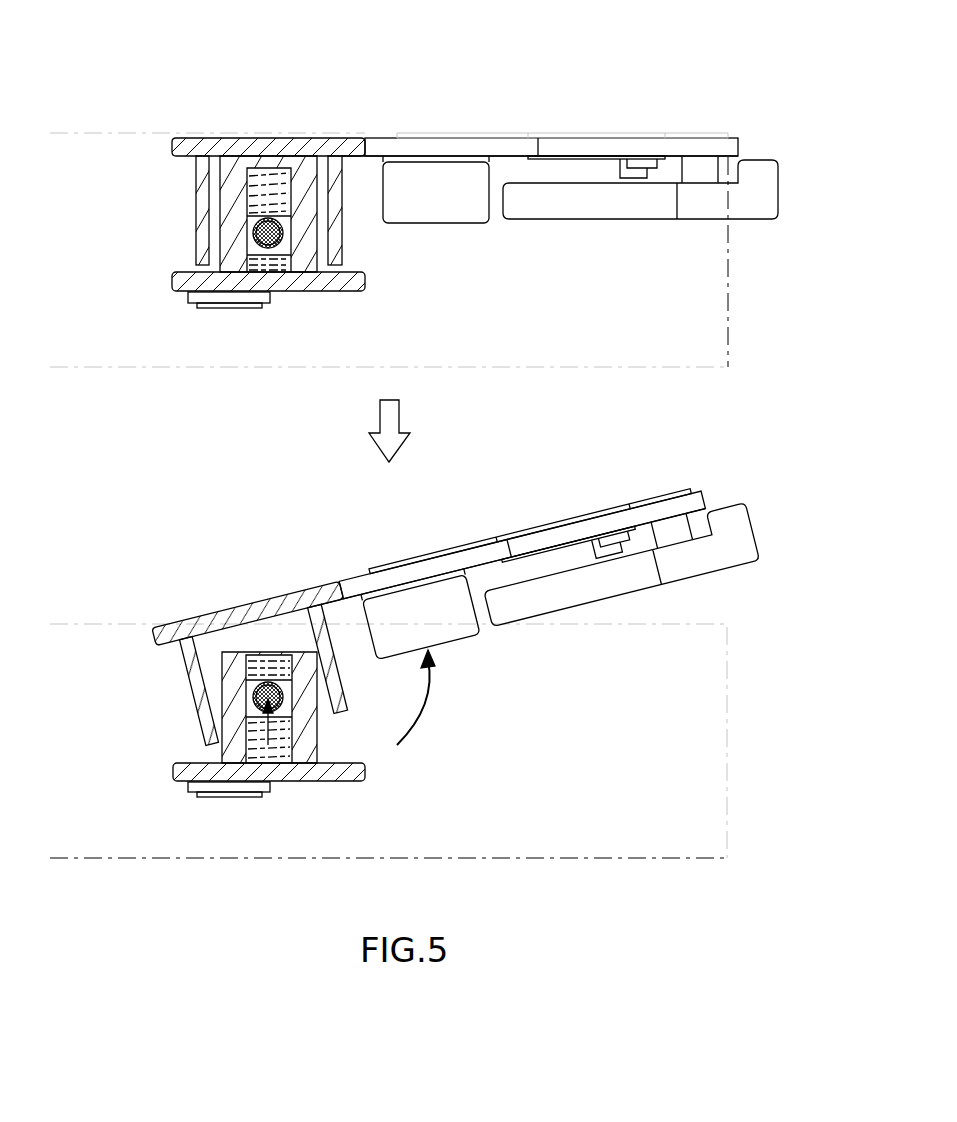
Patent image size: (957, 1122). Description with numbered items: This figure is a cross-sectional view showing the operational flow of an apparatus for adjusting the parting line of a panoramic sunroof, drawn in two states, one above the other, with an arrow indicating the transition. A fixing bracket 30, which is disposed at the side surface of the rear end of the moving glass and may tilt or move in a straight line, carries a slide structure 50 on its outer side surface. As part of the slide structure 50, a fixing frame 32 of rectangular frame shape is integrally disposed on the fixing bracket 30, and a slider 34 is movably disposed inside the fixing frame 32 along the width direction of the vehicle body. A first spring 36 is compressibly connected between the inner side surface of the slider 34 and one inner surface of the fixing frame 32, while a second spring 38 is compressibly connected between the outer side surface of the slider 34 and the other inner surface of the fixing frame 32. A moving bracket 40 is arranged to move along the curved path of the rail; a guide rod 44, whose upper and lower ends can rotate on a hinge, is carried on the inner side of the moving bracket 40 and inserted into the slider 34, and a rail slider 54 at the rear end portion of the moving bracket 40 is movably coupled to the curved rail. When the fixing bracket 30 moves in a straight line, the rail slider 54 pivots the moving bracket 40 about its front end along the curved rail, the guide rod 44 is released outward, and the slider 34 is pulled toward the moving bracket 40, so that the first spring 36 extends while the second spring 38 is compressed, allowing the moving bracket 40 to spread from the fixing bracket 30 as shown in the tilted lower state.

The fixing bracket 30 is at (179, 291).
The fixing frame 32 is at (200, 180).
The slider 34 is at (253, 224).
The first spring 36 is at (266, 294).
The second spring 38 is at (264, 168).
The moving bracket 40 is at (375, 140).
The guide rod 44 is at (283, 231).
The slide structure 50 is at (345, 252).
The rail slider 54 is at (605, 205).